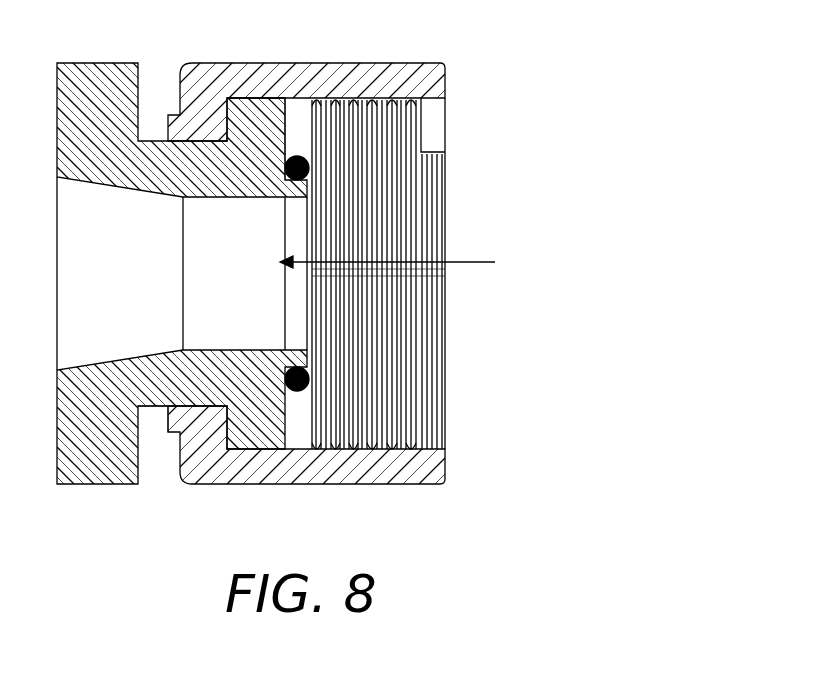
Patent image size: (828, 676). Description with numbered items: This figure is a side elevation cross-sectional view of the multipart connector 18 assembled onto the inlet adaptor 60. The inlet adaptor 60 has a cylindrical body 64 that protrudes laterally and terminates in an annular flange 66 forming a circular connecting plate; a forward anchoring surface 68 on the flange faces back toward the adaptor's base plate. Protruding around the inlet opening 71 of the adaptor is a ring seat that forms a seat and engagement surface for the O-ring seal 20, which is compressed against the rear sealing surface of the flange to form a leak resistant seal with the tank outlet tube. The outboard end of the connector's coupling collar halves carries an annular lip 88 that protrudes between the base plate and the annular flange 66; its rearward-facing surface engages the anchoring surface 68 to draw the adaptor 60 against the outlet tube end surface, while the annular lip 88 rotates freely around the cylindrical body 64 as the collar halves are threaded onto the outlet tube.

The multipart connector 18 is at (456, 83).
The inlet adaptor 60 is at (142, 57).
The cylindrical body 64 is at (212, 177).
The annular flange 66 is at (268, 425).
The forward anchoring surface 68 is at (225, 427).
The annular lip 88 is at (193, 427).
The O-ring seal 20 is at (306, 390).
The inlet opening 71 is at (401, 262).